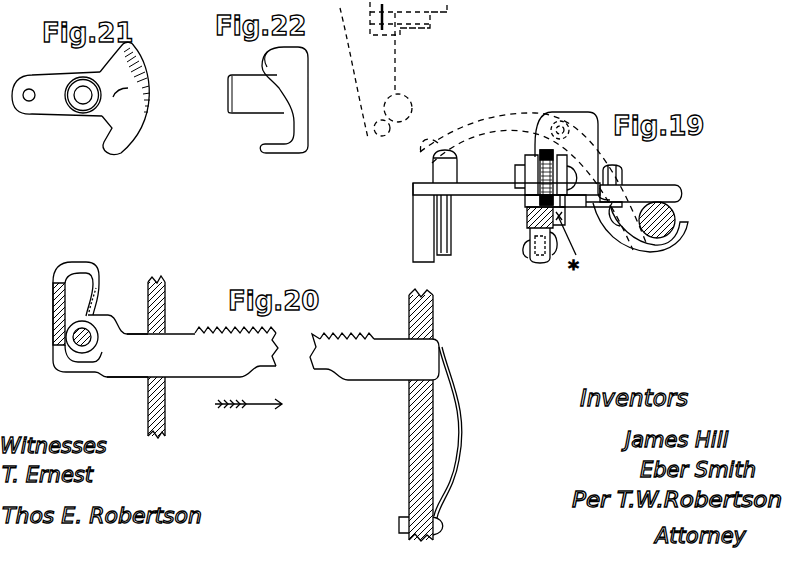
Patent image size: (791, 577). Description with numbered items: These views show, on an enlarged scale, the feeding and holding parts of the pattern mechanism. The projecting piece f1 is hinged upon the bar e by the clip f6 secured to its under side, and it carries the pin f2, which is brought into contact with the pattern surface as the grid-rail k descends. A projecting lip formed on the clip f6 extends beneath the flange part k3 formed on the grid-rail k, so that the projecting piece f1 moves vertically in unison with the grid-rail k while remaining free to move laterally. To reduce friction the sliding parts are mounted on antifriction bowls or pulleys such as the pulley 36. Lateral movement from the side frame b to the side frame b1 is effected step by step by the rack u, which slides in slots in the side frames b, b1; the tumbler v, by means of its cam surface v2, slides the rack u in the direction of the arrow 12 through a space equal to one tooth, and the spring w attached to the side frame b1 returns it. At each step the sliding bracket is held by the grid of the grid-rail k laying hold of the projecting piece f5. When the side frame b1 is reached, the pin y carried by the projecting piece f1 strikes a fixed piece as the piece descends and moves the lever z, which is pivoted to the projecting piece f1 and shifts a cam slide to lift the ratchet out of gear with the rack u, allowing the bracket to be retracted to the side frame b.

In FIG. 21, the tumbler v is at (78, 118).
In FIG. 22, the tumbler v is at (256, 94).
In FIG. 20, the tumbler v is at (53, 283).
In FIG. 21, the cam surface v2 is at (150, 83).
In FIG. 22, the cam surface v2 is at (280, 88).
In FIG. 20, the cam surface v2 is at (87, 312).
In FIG. 19, the projecting piece f1 is at (657, 160).
In FIG. 19, the pin f2 is at (425, 233).
In FIG. 19, the projecting piece f5 is at (548, 296).
In FIG. 19, the clip f6 is at (644, 238).
In FIG. 19, the lever z is at (533, 170).
In FIG. 19, the antifriction bowl 36 is at (540, 153).
In FIG. 19, the bar e is at (679, 217).
In FIG. 19, the grid-rail k is at (531, 224).
In FIG. 19, the flange part k3 is at (563, 218).
In FIG. 19, the pin y is at (431, 152).
In FIG. 20, the rack u is at (273, 353).
In FIG. 20, the side frame b is at (164, 413).
In FIG. 20, the side frame b1 is at (423, 446).
In FIG. 20, the spring w is at (462, 424).
In FIG. 20, the arrow 12 is at (248, 415).